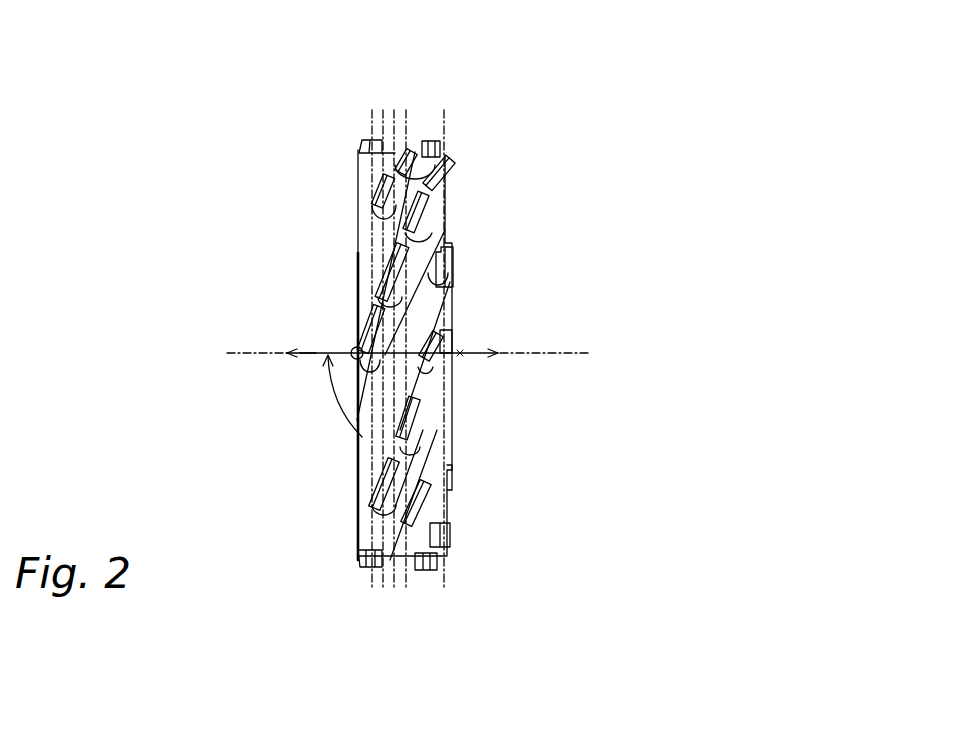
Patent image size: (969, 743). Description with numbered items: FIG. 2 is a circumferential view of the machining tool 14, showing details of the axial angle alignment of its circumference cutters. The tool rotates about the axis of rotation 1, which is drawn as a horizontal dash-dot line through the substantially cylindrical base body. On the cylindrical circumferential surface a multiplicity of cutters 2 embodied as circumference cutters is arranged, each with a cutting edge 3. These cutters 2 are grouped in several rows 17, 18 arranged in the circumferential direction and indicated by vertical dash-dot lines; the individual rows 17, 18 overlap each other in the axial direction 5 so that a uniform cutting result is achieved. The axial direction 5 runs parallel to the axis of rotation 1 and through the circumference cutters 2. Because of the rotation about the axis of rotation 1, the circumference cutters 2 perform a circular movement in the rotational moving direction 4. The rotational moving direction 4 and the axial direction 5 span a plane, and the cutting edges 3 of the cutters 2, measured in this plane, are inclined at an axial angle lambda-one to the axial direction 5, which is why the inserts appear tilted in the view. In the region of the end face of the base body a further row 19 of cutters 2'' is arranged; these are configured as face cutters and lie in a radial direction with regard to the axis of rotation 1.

The axis of rotation 1 is at (553, 353).
The cutters 2 is at (400, 338).
The cutters 2'' is at (470, 250).
The cutting edges 3 is at (434, 142).
The rotational moving direction 4 is at (440, 480).
The axial direction 5 is at (312, 353).
The machining tool 14 is at (530, 417).
The row 17 is at (370, 118).
The row 18 is at (382, 110).
The row 19 is at (447, 120).